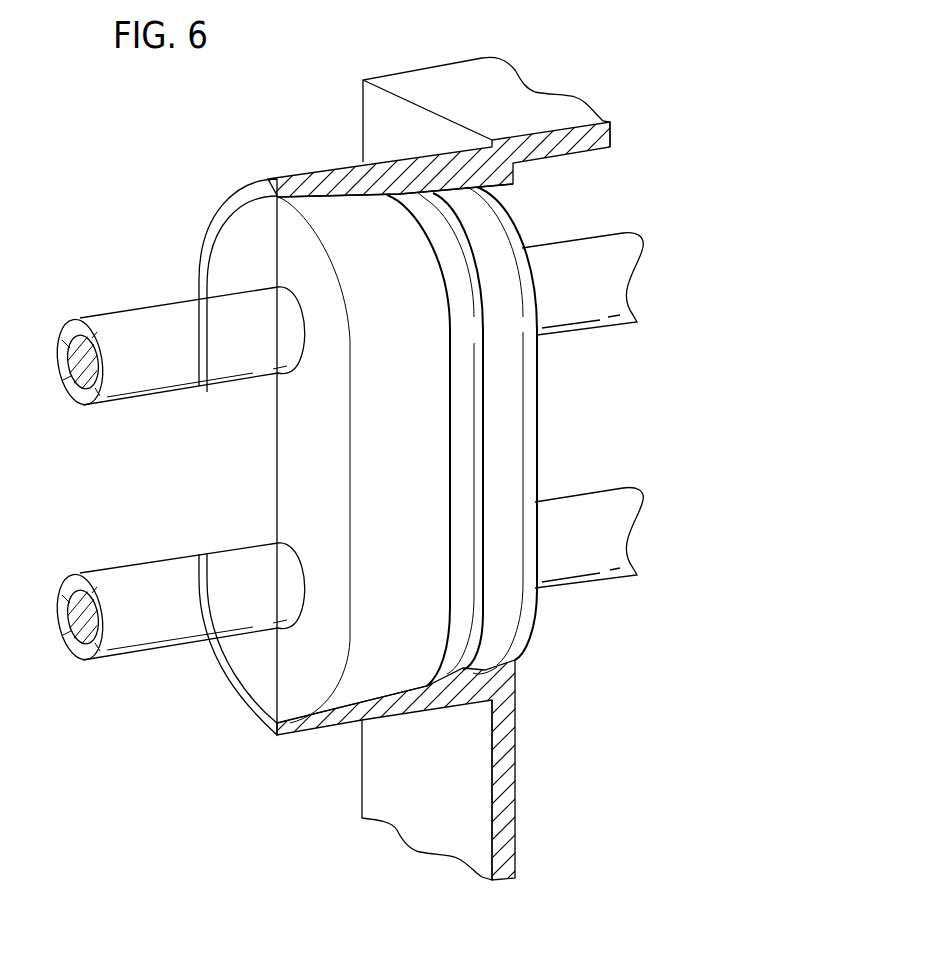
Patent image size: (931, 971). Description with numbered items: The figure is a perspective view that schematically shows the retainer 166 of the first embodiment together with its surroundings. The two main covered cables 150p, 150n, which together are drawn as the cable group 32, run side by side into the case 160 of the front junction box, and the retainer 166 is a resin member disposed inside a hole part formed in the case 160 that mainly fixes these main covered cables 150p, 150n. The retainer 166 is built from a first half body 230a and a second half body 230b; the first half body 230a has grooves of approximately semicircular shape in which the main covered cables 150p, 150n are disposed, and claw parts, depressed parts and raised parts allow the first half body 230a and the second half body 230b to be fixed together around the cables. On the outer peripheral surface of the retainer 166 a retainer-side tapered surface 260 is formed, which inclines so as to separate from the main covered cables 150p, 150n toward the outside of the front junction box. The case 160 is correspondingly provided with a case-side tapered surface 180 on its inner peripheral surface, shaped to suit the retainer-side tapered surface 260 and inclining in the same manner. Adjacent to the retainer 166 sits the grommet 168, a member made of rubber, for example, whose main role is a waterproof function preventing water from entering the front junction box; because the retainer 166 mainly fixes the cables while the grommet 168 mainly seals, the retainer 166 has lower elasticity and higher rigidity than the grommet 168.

The wiring harness 32 is at (176, 486).
The main covered cable 150p is at (125, 387).
The main covered cable 150n is at (125, 573).
The case 160 is at (333, 182).
The retainer 166 is at (311, 770).
The grommet 168 is at (507, 437).
The case-side tapered surface 180 is at (367, 196).
The first half body 230a is at (248, 668).
The second half body 230b is at (307, 700).
The retainer-side tapered surface 260 is at (330, 224).